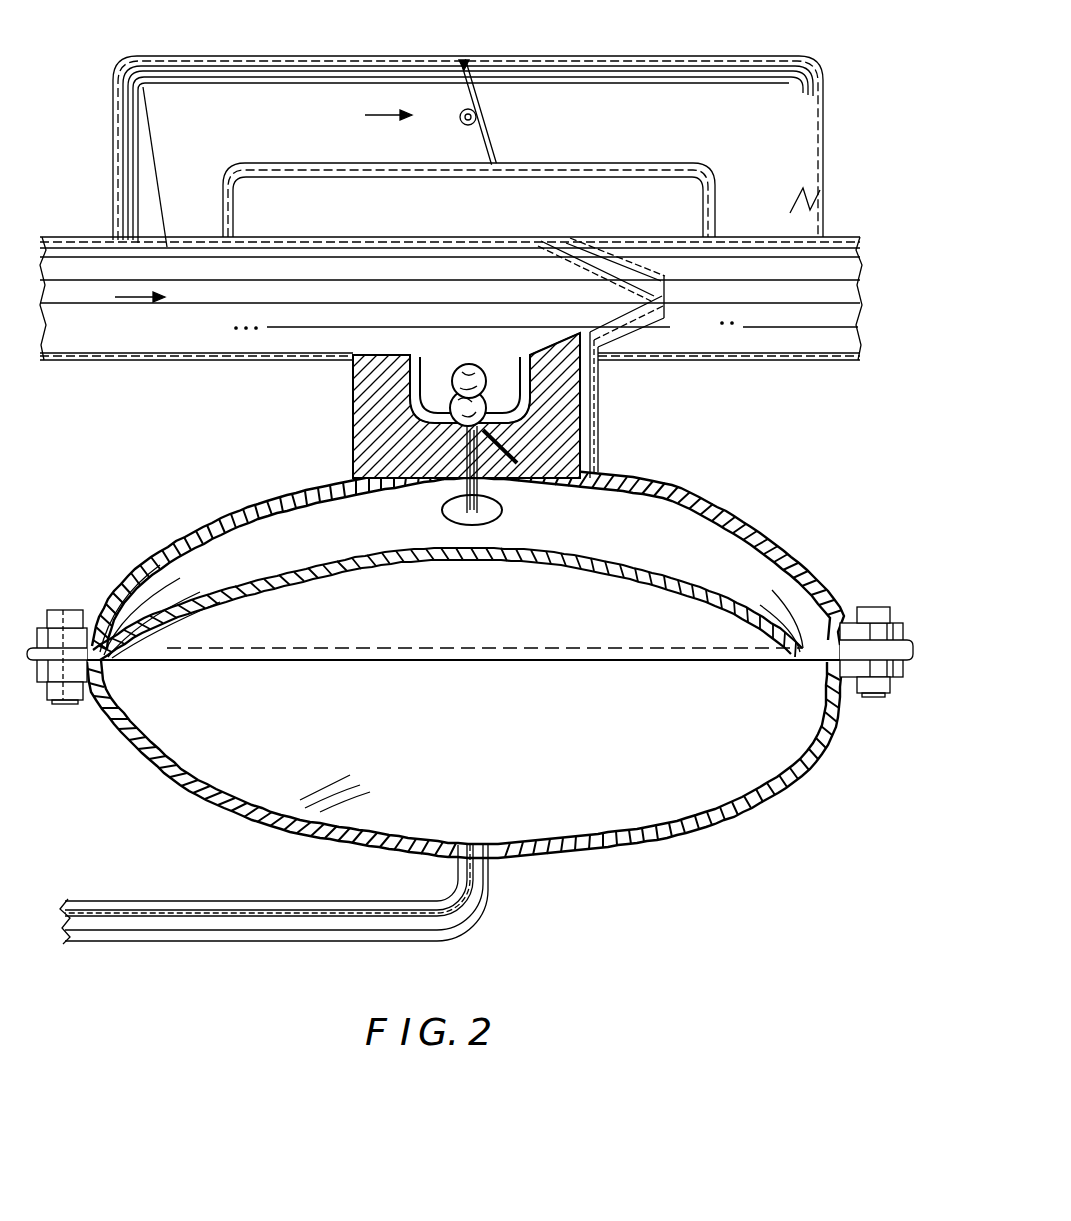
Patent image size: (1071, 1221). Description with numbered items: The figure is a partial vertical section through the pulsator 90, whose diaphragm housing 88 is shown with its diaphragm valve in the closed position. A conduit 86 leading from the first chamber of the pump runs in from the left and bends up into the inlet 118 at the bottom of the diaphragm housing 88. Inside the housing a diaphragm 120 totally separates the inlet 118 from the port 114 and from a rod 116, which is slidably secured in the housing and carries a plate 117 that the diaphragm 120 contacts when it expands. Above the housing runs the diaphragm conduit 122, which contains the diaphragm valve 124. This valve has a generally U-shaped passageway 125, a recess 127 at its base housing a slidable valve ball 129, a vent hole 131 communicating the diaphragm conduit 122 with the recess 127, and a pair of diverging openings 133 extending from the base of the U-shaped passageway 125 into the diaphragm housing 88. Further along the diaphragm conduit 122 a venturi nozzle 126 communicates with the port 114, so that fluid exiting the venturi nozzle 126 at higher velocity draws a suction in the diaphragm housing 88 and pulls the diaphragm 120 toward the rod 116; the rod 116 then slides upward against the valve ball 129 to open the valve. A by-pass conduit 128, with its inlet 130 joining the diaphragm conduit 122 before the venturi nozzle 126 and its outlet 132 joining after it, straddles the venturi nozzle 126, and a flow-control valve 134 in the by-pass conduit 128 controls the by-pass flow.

The conduit 86 is at (405, 920).
The diaphragm housing 88 is at (706, 800).
The pulsator 90 is at (735, 490).
The port 114 is at (588, 432).
The rod 116 is at (463, 478).
The plate 117 is at (502, 512).
The inlet 118 is at (478, 835).
The diaphragm 120 is at (420, 557).
The diaphragm conduit 122 is at (90, 280).
The diaphragm valve 124 is at (460, 362).
The U-shaped passageway 125 is at (627, 352).
The venturi nozzle 126 is at (714, 318).
The recess 127 is at (527, 353).
The by-pass conduit 128 is at (262, 82).
The valve ball 129 is at (442, 372).
The inlet 130 is at (152, 62).
The vent hole 131 is at (470, 372).
The outlet 132 is at (822, 190).
The diverging openings 133 is at (437, 460).
The flow-control valve 134 is at (470, 62).